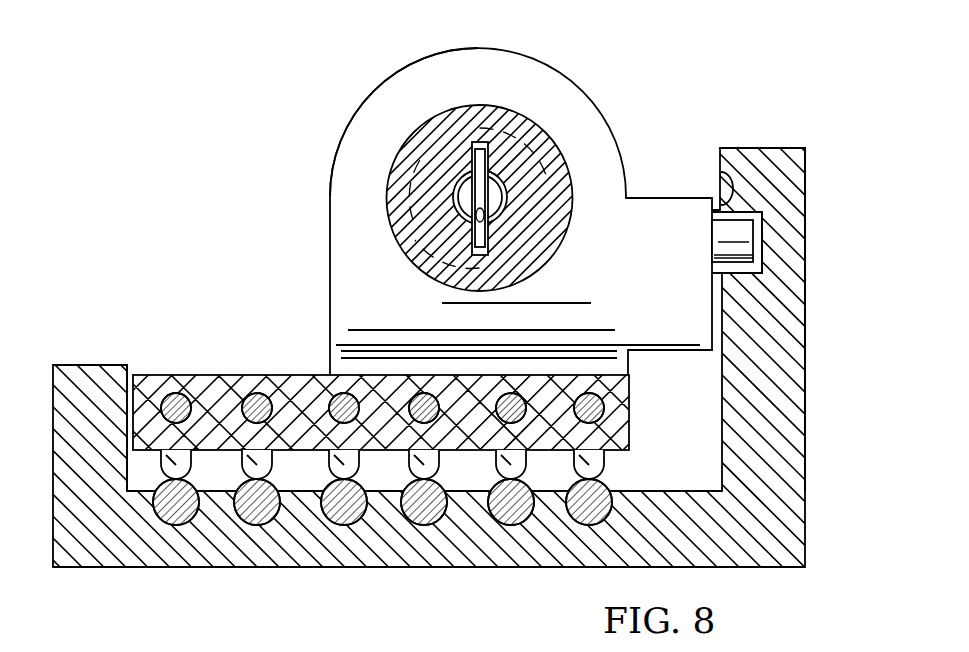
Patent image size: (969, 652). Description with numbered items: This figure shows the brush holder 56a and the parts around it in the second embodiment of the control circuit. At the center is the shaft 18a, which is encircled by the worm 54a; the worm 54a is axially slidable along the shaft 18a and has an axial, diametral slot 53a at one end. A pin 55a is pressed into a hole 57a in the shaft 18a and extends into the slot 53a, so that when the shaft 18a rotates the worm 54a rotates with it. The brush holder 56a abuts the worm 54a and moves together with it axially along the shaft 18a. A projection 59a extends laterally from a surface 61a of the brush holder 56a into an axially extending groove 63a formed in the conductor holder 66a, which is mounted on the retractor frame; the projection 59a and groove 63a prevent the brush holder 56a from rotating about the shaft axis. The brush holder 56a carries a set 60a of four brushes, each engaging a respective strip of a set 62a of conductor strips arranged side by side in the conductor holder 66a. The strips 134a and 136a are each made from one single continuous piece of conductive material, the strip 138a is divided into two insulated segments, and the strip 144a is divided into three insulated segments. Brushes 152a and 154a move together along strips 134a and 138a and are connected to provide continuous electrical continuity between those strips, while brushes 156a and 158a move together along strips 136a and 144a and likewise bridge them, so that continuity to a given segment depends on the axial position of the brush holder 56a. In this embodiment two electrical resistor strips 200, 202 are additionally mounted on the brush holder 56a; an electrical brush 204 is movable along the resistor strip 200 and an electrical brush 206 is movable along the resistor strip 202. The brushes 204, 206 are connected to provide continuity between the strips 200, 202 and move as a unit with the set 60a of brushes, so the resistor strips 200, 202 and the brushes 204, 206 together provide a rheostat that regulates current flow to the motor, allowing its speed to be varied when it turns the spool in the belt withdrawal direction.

The brush holder 56a is at (650, 93).
The shaft 18a is at (462, 190).
The worm 54a is at (395, 197).
The pin 55a is at (482, 160).
The hole 57a is at (482, 228).
The slot 53a is at (484, 262).
The projection 59a is at (737, 230).
The surface 61a is at (720, 173).
The groove 63a is at (750, 272).
The brush 152a is at (450, 390).
The brush 154a is at (631, 418).
The brush 156a is at (372, 396).
The brush 158a is at (305, 428).
The electrical brush 204 is at (173, 463).
The electrical brush 206 is at (125, 363).
The resistor strip 202 is at (184, 512).
The resistor strip 200 is at (262, 506).
The strip 144a is at (348, 513).
The strip 136a is at (423, 503).
The strip 134a is at (513, 507).
The strip 138a is at (590, 503).
The set of brushes 60a is at (642, 467).
The conductor holder 66a is at (765, 467).
The set of conductor strips 62a is at (647, 532).